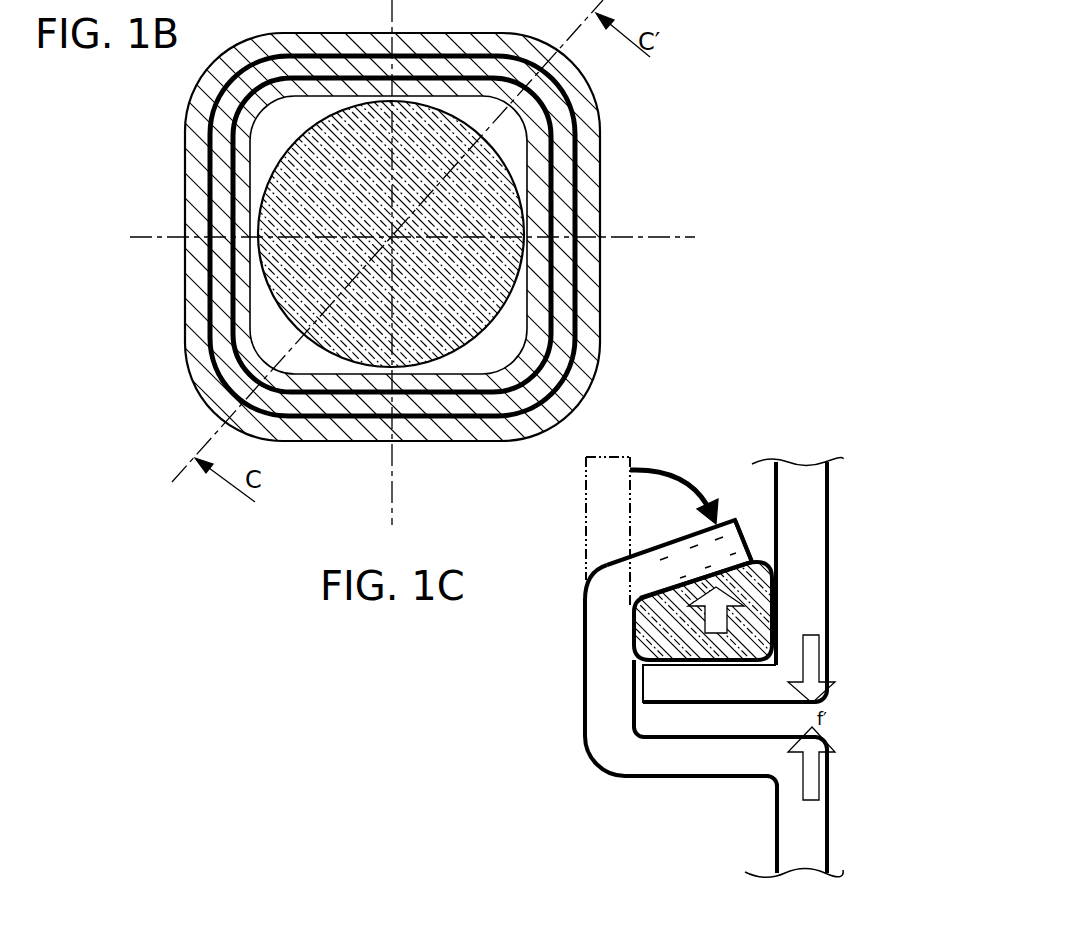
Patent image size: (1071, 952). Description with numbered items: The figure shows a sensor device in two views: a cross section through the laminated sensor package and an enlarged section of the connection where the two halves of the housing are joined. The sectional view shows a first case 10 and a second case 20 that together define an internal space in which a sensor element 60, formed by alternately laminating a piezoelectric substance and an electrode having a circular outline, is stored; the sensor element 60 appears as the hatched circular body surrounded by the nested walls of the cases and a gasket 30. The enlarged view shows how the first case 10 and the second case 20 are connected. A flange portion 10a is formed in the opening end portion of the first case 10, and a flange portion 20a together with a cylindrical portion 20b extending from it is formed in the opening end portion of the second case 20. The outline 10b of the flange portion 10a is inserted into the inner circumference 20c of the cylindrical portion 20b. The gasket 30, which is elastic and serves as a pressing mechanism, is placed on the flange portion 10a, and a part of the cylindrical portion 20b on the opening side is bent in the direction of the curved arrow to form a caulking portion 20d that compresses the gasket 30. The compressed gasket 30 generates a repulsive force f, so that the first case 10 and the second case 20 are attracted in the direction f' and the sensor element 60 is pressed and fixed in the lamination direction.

In FIG. 1B, the first case 10 is at (536, 142).
In FIG. 1C, the first case 10 is at (795, 495).
In FIG. 1C, the flange portion 10a is at (677, 688).
In FIG. 1C, the outline 10b is at (633, 675).
In FIG. 1B, the second case 20 is at (583, 344).
In FIG. 1C, the second case 20 is at (800, 840).
In FIG. 1C, the flange portion 20a is at (743, 756).
In FIG. 1C, the cylindrical portion 20b is at (573, 462).
In FIG. 1C, the inner circumference 20c is at (640, 512).
In FIG. 1C, the caulking portion 20d is at (742, 528).
In FIG. 1B, the gasket 30 is at (557, 207).
In FIG. 1C, the gasket 30 is at (640, 560).
In FIG. 1B, the sensor element 60 is at (332, 159).